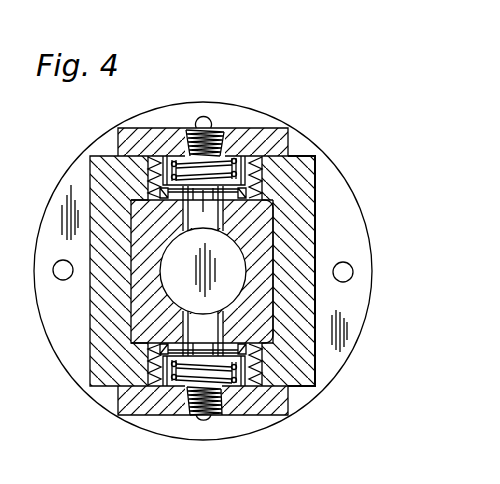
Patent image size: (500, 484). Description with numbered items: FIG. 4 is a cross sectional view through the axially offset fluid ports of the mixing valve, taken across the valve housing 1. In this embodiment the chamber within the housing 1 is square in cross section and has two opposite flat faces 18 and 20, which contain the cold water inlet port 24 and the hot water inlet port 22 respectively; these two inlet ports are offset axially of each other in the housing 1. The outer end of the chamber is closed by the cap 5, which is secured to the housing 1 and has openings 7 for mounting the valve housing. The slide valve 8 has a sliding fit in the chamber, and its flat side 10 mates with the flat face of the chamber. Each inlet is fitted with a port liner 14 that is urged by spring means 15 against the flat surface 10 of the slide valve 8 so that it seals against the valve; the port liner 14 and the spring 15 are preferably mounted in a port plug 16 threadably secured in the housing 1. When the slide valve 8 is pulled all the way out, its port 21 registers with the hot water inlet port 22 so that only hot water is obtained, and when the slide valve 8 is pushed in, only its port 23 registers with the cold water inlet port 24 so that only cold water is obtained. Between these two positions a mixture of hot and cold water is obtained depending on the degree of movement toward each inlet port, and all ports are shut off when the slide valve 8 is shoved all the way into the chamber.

The valve housing 1 is at (315, 372).
The cap 5 is at (93, 140).
The openings 7 is at (201, 117).
The slide valve 8 is at (150, 292).
The flat side 10 is at (165, 333).
The port liner 14 is at (175, 352).
The spring means 15 is at (150, 160).
The port plug 16 is at (248, 157).
The flat face 18 is at (255, 333).
The flat face 20 is at (275, 209).
The port 21 is at (240, 152).
The hot water inlet port 22 is at (186, 135).
The port 23 is at (182, 420).
The cold water inlet port 24 is at (222, 418).